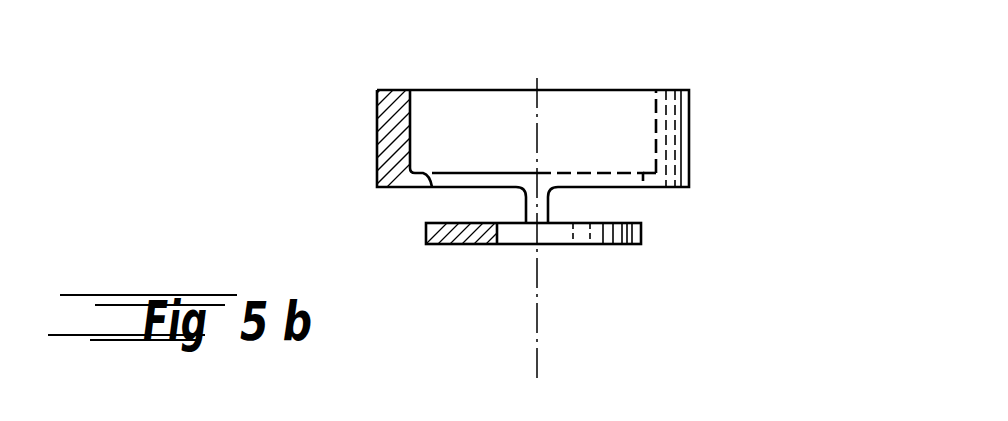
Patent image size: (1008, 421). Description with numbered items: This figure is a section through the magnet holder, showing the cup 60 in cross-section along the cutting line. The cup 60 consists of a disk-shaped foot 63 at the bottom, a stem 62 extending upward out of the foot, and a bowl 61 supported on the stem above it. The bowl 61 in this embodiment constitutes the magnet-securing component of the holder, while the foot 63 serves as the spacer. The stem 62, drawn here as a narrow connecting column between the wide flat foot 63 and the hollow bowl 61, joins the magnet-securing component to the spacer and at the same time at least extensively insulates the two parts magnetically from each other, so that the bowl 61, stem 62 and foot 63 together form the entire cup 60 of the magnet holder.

The cup 60 is at (337, 83).
The bowl 61 is at (667, 112).
The stem 62 is at (533, 212).
The disk-shaped foot 63 is at (603, 243).